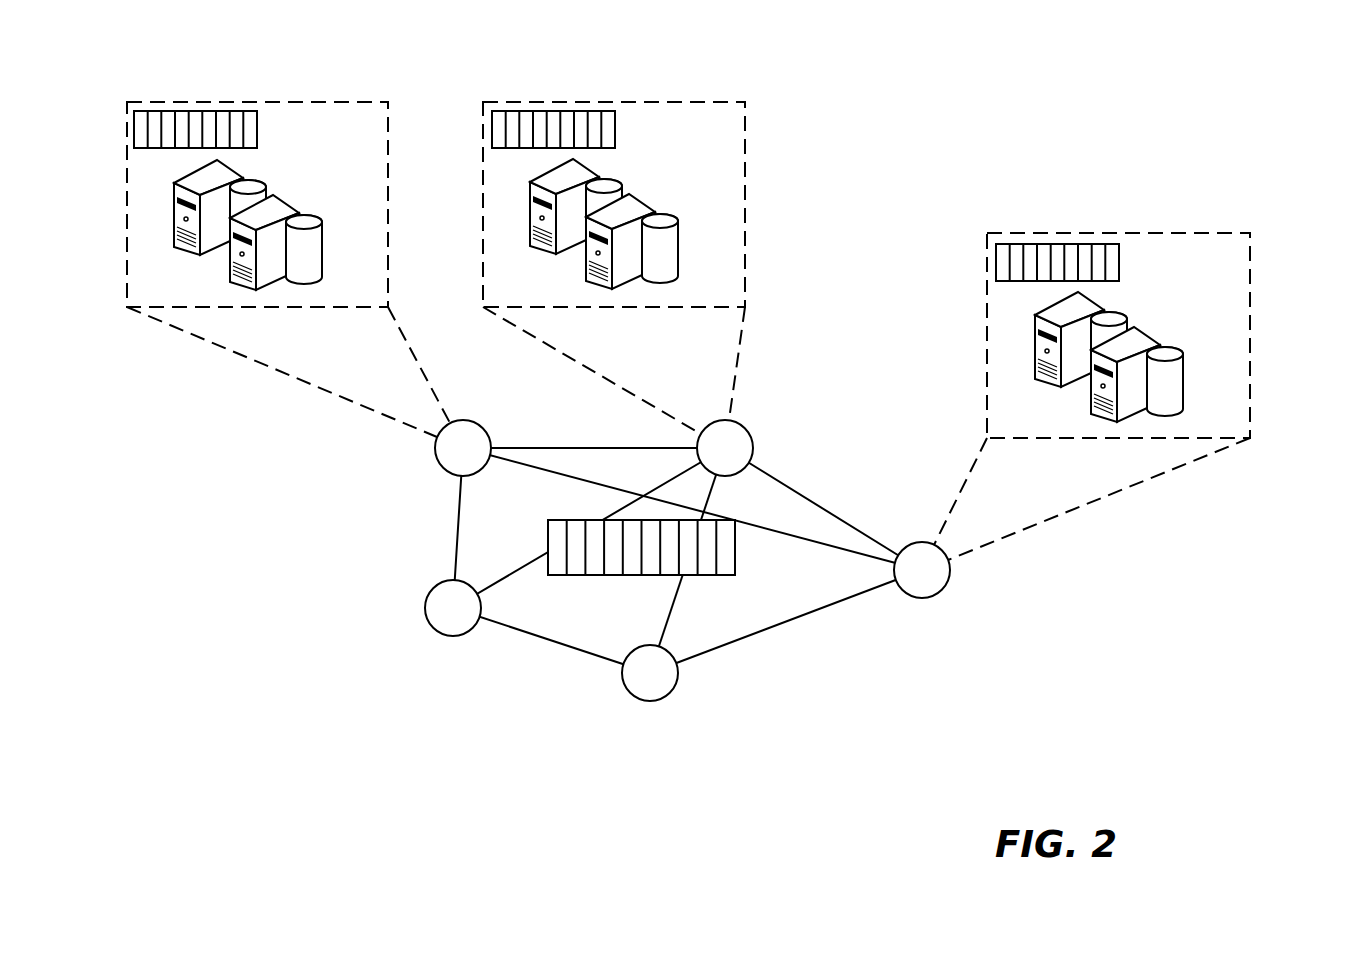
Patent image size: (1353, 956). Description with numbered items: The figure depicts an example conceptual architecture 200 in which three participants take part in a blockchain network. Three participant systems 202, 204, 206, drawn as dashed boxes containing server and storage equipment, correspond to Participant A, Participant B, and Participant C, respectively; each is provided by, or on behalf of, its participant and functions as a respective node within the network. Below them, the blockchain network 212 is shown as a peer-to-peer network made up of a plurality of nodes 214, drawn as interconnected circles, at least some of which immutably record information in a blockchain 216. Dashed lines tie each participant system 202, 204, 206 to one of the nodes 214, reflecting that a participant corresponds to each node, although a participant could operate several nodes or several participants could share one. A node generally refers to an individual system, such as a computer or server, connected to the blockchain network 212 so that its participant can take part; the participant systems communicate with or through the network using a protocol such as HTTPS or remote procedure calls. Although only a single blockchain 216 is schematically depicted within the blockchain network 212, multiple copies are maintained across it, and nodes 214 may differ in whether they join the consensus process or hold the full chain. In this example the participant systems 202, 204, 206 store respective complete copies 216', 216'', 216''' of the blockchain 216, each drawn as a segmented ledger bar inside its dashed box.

The conceptual architecture 200 is at (1250, 74).
The participant system 202 is at (288, 178).
The participant system 204 is at (652, 177).
The participant system 206 is at (1156, 310).
The blockchain network 212 is at (350, 440).
The node 214 is at (484, 426).
The blockchain 216 is at (641, 578).
The complete copy of the blockchain 216' is at (243, 98).
The complete copy of the blockchain 216'' is at (602, 97).
The complete copy of the blockchain 216''' is at (1108, 232).